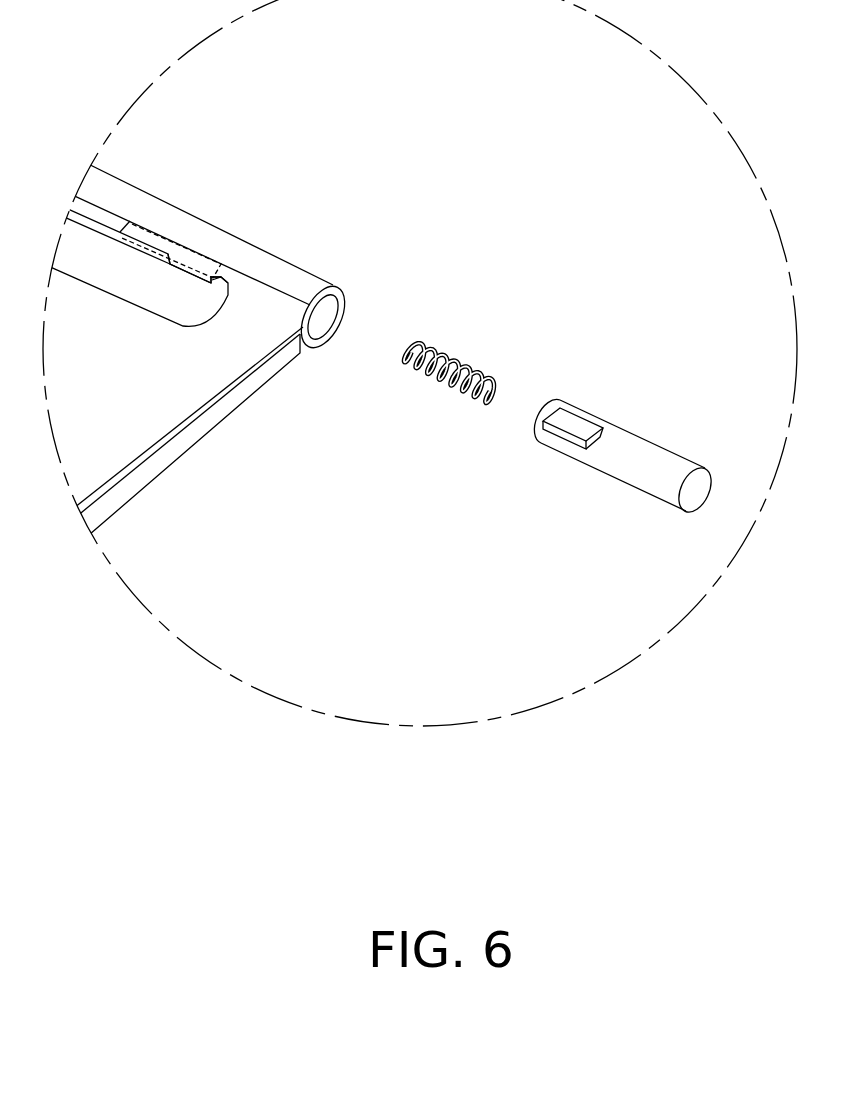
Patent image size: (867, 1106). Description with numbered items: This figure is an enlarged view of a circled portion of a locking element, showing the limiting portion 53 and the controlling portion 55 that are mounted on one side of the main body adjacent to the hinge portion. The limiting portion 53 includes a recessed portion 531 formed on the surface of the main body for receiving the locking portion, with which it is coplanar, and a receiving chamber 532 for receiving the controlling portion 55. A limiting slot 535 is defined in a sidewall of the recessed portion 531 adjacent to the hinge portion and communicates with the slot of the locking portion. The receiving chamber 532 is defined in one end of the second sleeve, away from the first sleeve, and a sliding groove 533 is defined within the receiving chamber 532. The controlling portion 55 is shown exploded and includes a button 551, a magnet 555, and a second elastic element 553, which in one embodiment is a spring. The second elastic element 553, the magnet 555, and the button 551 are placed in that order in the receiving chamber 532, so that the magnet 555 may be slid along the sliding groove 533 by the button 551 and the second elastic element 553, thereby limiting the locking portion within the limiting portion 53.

The limiting portion 53 is at (229, 330).
The recessed portion 531 is at (207, 297).
The receiving chamber 532 is at (323, 312).
The sliding groove 533 is at (138, 233).
The limiting slot 535 is at (190, 270).
The controlling portion 55 is at (549, 475).
The button 551 is at (600, 494).
The second elastic element 553 is at (463, 395).
The magnet 555 is at (543, 482).